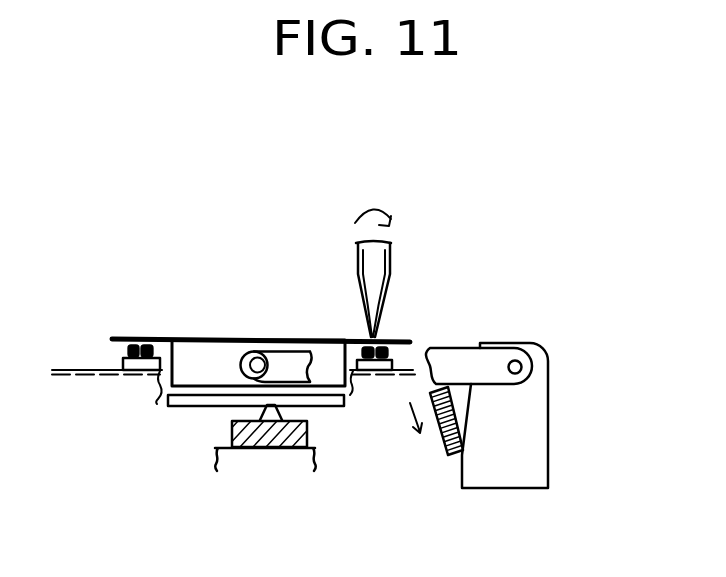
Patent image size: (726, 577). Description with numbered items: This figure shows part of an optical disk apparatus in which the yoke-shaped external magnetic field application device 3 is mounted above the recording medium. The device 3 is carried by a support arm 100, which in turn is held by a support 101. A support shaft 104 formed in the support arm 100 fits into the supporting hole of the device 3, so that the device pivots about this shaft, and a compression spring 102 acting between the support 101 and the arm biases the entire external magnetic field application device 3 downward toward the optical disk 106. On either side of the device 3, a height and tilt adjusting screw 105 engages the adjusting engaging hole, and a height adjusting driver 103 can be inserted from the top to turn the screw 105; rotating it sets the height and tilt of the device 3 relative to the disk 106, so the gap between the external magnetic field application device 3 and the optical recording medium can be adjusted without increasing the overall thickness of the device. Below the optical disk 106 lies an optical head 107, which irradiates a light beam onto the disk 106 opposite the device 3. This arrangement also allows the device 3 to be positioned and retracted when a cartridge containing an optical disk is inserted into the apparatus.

The holder 3 is at (193, 377).
The support arm 100 is at (465, 356).
The support 101 is at (533, 407).
The compression spring 102 is at (442, 452).
The height adjusting driver 103 is at (376, 261).
The support shaft 104 is at (257, 363).
The height and tilt adjusting screw 105 is at (132, 351).
The optical disk 106 is at (215, 403).
The optical head 107 is at (273, 446).